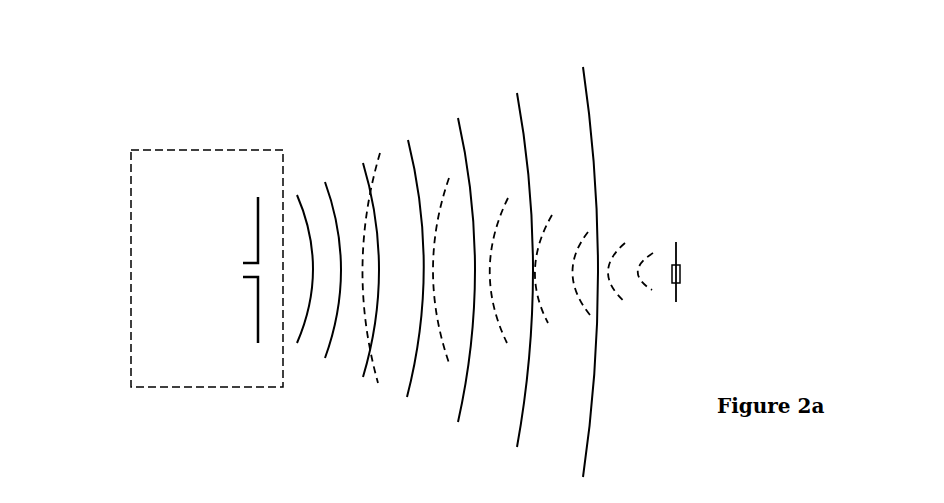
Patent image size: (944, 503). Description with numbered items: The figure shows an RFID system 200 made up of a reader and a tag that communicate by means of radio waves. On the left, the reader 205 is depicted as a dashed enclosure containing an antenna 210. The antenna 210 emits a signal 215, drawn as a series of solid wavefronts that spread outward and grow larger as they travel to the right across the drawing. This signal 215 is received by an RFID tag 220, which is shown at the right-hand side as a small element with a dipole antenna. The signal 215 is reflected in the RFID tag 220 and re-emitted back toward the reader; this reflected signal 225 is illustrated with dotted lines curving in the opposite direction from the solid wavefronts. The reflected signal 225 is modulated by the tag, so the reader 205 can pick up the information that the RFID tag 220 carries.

The RFID system 200 is at (369, 272).
The reader 205 is at (171, 150).
The antenna 210 is at (257, 227).
The signal 215 is at (523, 420).
The RFID tag 220 is at (703, 267).
The reflected signal 225 is at (581, 240).